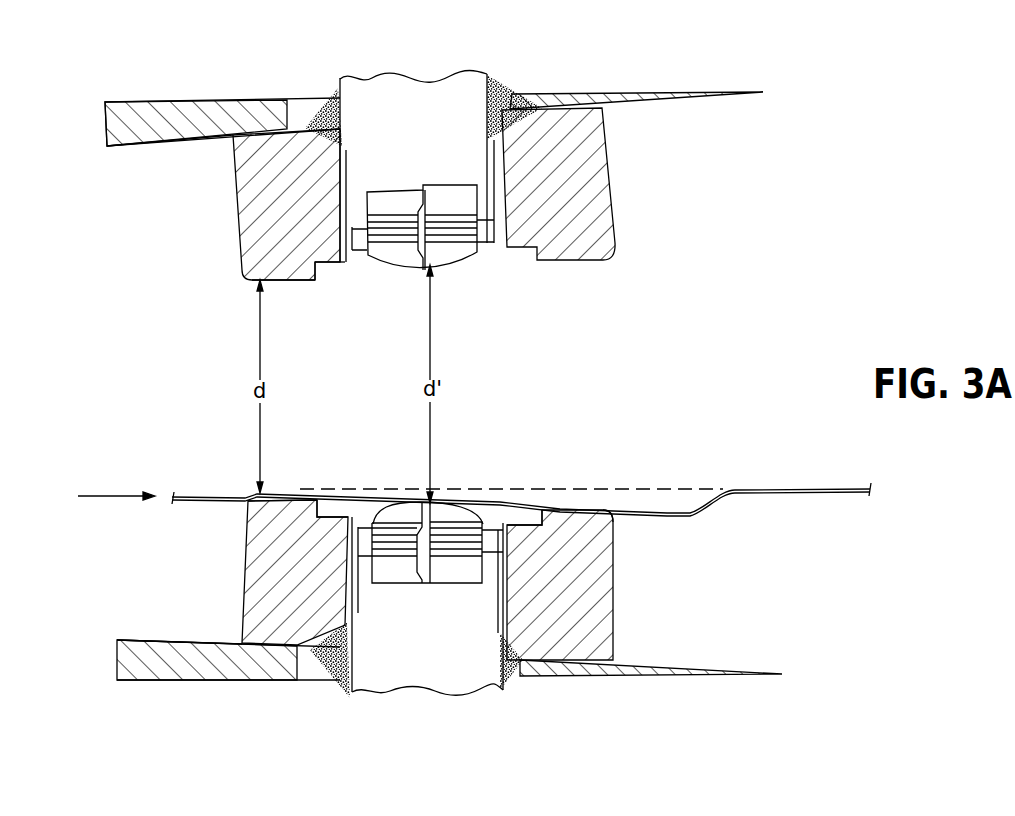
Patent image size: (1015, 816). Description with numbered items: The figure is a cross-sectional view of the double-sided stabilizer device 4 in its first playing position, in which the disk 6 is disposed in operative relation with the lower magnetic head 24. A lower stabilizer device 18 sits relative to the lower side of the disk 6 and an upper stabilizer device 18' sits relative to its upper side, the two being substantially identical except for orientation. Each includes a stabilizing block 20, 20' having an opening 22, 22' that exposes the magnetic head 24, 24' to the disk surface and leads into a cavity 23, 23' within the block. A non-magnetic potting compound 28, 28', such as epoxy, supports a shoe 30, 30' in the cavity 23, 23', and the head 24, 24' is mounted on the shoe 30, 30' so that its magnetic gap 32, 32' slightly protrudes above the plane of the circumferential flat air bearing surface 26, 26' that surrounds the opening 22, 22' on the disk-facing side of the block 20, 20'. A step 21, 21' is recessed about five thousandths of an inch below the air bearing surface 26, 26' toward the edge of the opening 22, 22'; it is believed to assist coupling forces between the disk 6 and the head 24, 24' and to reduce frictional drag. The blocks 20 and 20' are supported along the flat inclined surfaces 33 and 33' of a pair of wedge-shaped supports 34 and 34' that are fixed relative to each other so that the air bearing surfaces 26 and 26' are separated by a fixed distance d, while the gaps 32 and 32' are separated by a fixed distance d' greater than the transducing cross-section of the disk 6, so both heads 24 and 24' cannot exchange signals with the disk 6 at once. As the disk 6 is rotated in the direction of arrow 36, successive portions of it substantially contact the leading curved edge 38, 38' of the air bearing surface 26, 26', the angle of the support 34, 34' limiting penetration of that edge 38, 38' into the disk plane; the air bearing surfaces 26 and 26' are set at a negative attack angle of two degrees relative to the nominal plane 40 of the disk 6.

The double-sided stabilizer device 4 is at (513, 443).
The disk 6 is at (197, 495).
The lower stabilizer device 18 is at (220, 572).
The upper stabilizer device 18' is at (216, 204).
The stabilizing block 20 is at (644, 593).
The stabilizing block 20' is at (632, 176).
The step 21 is at (452, 481).
The step 21' is at (329, 299).
The opening 22 is at (430, 490).
The opening 22' is at (419, 287).
The cavity 23 is at (424, 580).
The cavity 23' is at (418, 196).
The magnetic head 24 is at (453, 518).
The magnetic head 24' is at (434, 253).
The air bearing surface 26 is at (620, 527).
The air bearing surface 26' is at (298, 308).
The potting compound 28 is at (412, 682).
The potting compound 28' is at (436, 94).
The shoe 30 is at (427, 637).
The shoe 30' is at (413, 149).
The magnetic gap 32 is at (449, 515).
The magnetic gap 32' is at (402, 262).
The flat inclined surface 33 is at (170, 615).
The flat inclined surface 33' is at (155, 168).
The wedge-shaped support 34 is at (228, 695).
The wedge-shaped support 34' is at (220, 94).
The arrow 36 is at (92, 496).
The leading curved edge 38 is at (238, 522).
The leading curved edge 38' is at (245, 297).
The nominal plane 40 is at (494, 495).